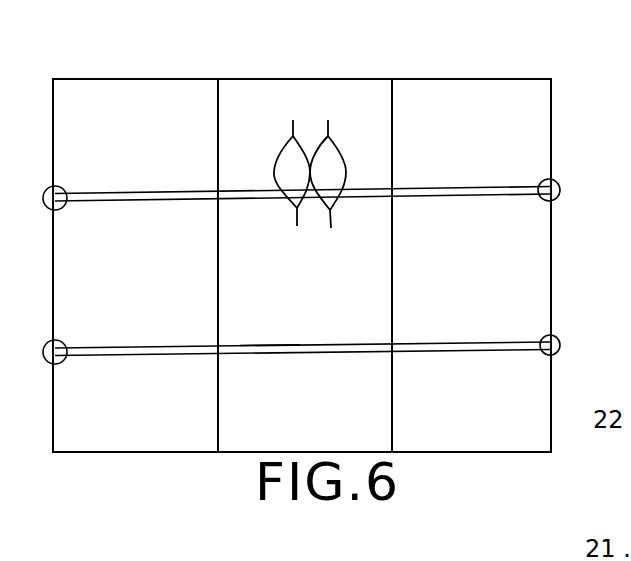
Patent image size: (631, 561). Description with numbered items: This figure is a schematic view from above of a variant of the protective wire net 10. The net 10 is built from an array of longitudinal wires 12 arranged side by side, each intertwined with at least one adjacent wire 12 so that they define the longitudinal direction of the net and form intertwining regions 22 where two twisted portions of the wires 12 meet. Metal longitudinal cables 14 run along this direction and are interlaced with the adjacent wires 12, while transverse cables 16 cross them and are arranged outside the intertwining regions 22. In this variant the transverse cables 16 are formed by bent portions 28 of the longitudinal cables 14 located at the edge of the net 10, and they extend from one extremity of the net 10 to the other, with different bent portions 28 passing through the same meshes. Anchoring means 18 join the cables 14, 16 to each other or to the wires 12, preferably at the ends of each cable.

The protective wire net 10 is at (117, 71).
The longitudinal wire 12 is at (280, 150).
The longitudinal cable 14 is at (55, 160).
The transverse cable 16 is at (140, 215).
The anchoring means 18 is at (62, 209).
The intertwining region 22 is at (347, 169).
The bent portion 28 is at (267, 346).